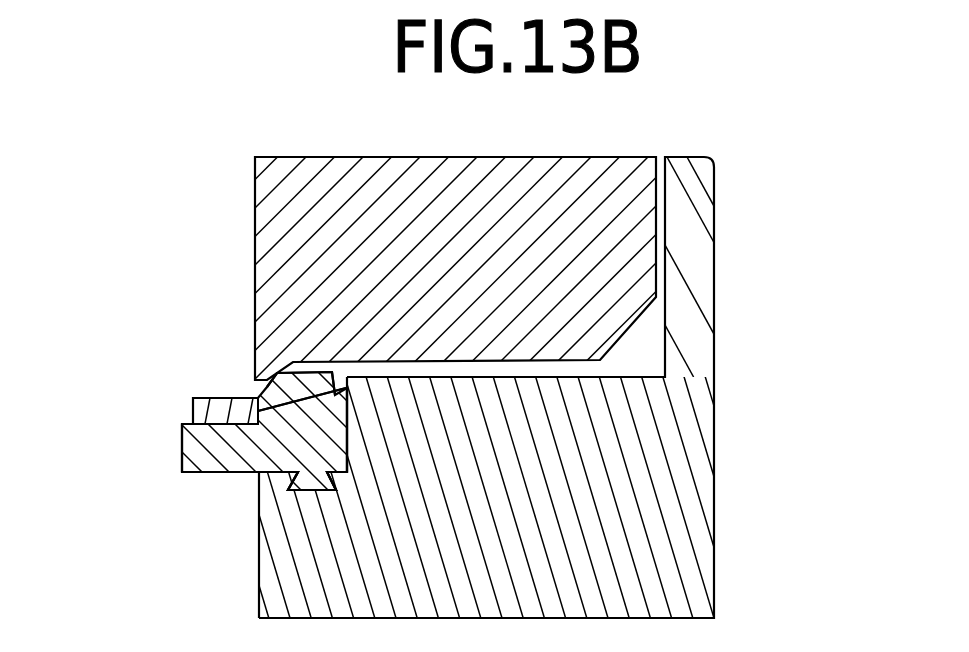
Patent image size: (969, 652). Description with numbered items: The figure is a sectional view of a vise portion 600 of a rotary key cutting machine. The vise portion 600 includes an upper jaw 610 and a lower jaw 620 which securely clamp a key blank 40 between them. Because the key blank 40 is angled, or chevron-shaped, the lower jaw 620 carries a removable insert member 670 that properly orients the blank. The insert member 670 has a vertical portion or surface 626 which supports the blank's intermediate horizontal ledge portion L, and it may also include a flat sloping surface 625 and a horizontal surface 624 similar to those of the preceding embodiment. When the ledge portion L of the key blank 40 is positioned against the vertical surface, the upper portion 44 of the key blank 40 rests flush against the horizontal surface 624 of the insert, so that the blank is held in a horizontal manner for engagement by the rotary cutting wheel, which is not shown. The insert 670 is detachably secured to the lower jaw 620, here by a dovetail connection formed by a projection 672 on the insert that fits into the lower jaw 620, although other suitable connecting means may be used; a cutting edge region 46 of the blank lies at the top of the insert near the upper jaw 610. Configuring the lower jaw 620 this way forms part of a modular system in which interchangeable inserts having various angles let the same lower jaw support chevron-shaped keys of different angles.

The vise portion 600 is at (600, 138).
The upper jaw 610 is at (268, 230).
The lower jaw 620 is at (697, 483).
The key blank 40 is at (197, 388).
The upper portion 44 is at (200, 412).
The cutting edge 46 is at (317, 385).
The intermediate horizontal ledge portion L is at (252, 408).
The flat sloping surface 625 is at (325, 388).
The vertical portion or surface 626 is at (259, 411).
The insert member 670 is at (195, 463).
The horizontal surface 624 is at (215, 473).
The locating projection 672 is at (303, 490).